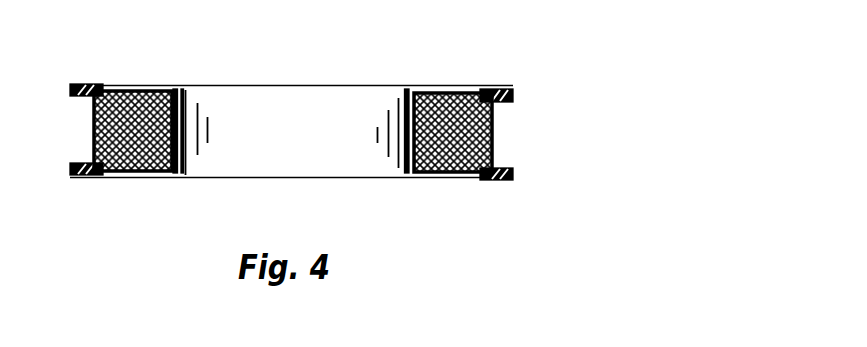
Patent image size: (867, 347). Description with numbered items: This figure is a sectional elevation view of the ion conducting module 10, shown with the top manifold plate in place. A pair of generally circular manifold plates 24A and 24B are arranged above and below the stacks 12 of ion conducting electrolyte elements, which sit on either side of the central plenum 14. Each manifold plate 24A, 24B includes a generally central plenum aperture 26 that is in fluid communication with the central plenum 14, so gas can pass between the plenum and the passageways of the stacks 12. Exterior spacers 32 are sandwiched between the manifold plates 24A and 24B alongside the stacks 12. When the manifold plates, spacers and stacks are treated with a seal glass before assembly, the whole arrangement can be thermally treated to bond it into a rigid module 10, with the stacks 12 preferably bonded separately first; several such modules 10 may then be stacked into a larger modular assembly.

The ion conducting module 10 is at (514, 82).
The stack 12 is at (92, 125).
The central plenum 14 is at (298, 142).
The manifold plate 24A is at (83, 84).
The manifold plate 24B is at (495, 181).
The central plenum aperture 26 is at (400, 87).
The exterior spacer 32 is at (177, 178).